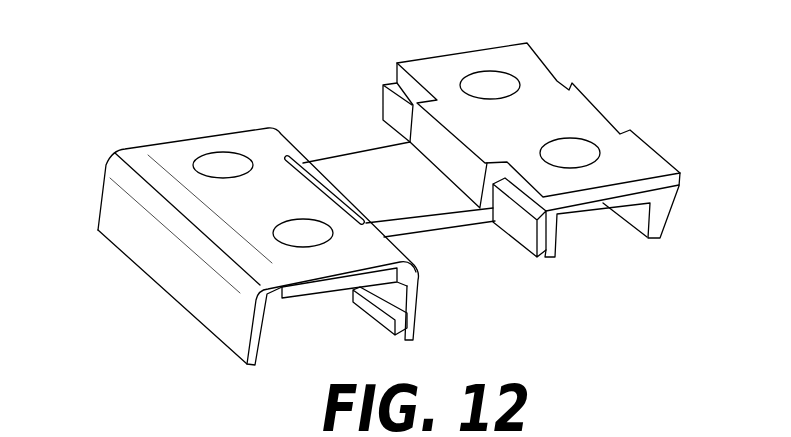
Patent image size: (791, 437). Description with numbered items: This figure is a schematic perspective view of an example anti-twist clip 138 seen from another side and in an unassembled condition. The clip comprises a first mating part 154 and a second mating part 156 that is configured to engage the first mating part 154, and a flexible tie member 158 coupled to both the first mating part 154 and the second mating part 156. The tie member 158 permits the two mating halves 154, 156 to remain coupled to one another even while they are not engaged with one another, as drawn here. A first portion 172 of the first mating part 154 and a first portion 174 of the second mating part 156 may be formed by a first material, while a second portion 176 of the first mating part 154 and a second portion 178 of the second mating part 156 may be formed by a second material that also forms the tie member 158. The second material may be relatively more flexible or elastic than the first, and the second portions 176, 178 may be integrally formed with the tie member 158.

The anti-twist clip 138 is at (148, 88).
The first mating part 154 is at (112, 152).
The second mating part 156 is at (643, 158).
The flexible tie member 158 is at (360, 157).
The first portion of the first mating part 172 is at (308, 278).
The first portion of the second mating part 174 is at (600, 198).
The second portion of the first mating part 176 is at (220, 153).
The second portion of the second mating part 178 is at (483, 77).